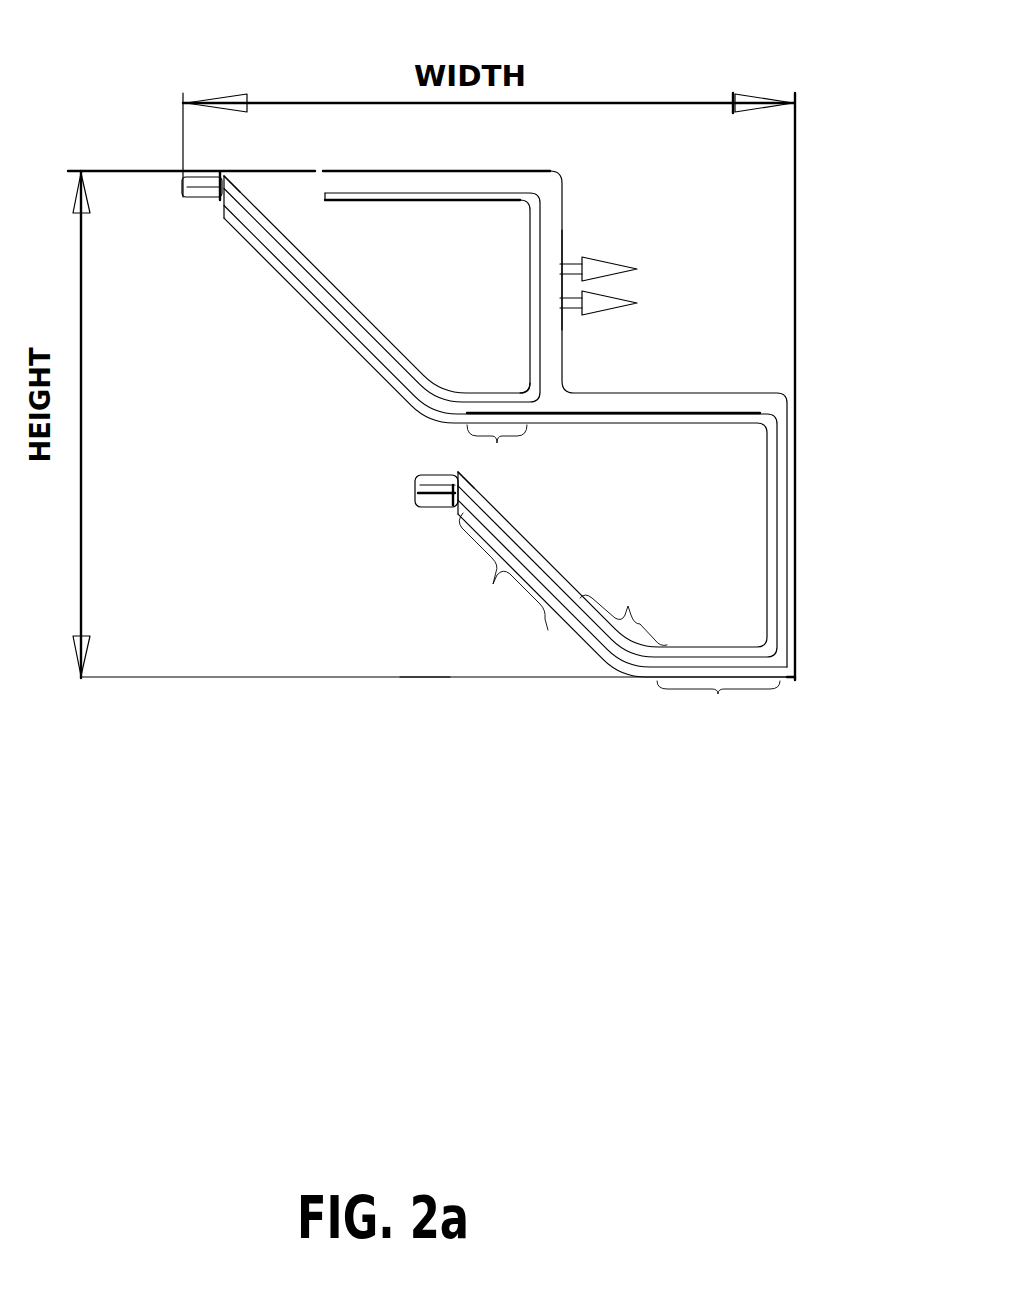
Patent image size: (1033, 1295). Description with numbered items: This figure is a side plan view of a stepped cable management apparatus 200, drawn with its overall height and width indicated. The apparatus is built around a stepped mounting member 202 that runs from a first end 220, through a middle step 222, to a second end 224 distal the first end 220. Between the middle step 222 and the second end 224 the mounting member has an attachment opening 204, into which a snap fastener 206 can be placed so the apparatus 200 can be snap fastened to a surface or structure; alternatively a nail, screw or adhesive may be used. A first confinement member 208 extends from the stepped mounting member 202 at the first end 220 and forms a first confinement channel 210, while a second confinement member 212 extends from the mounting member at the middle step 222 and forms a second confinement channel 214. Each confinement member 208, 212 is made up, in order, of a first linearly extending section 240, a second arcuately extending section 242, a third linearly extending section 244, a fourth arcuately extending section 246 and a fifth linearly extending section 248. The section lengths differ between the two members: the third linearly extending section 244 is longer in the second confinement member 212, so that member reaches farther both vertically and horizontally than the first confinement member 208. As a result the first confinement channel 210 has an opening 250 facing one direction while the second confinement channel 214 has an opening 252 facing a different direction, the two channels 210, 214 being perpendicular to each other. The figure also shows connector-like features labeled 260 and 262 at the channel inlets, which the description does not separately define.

The stepped cable management apparatus 200 is at (422, 724).
The stepped mounting member 202 is at (620, 395).
The attachment opening 204 is at (496, 300).
The snap fastener 206 is at (640, 272).
The first confinement member 208 is at (536, 563).
The first confinement channel 210 is at (649, 512).
The second confinement member 212 is at (322, 310).
The second confinement channel 214 is at (329, 254).
The first end 220 is at (795, 660).
The middle step 222 is at (518, 398).
The second end 224 is at (328, 192).
The first linearly extending section 240 is at (497, 444).
The second arcuately extending section 242 is at (375, 383).
The third linearly extending section 244 is at (270, 253).
The fourth arcuately extending section 246 is at (237, 177).
The fifth linearly extending section 248 is at (205, 198).
The opening 250 is at (342, 448).
The opening 252 is at (288, 193).
The second connector 260 is at (414, 490).
The first connector 262 is at (186, 182).